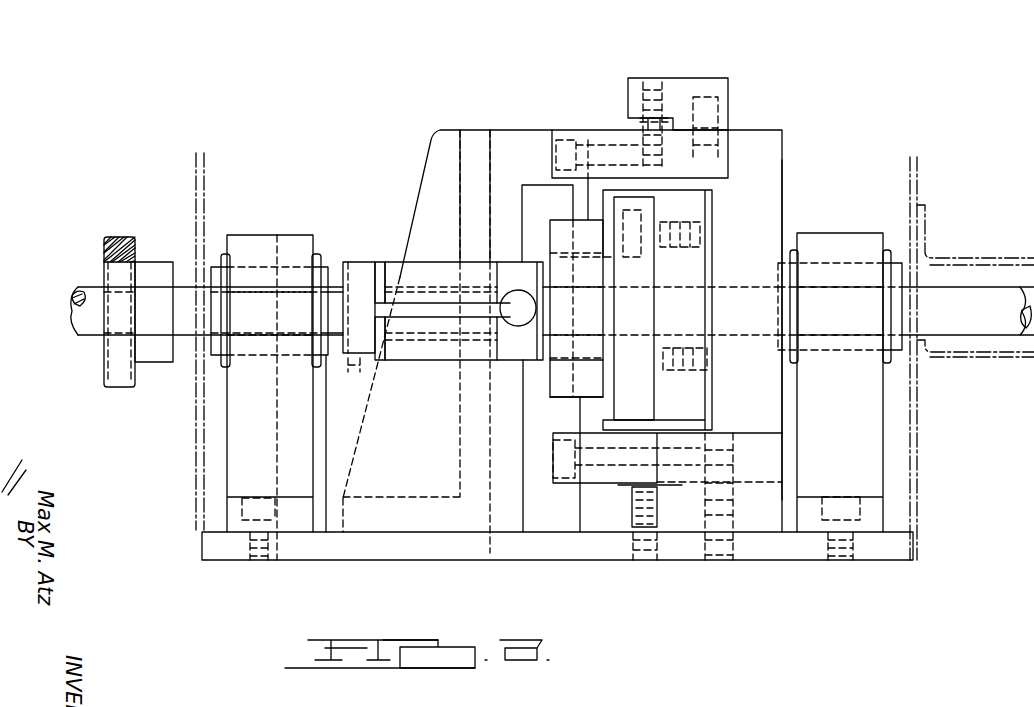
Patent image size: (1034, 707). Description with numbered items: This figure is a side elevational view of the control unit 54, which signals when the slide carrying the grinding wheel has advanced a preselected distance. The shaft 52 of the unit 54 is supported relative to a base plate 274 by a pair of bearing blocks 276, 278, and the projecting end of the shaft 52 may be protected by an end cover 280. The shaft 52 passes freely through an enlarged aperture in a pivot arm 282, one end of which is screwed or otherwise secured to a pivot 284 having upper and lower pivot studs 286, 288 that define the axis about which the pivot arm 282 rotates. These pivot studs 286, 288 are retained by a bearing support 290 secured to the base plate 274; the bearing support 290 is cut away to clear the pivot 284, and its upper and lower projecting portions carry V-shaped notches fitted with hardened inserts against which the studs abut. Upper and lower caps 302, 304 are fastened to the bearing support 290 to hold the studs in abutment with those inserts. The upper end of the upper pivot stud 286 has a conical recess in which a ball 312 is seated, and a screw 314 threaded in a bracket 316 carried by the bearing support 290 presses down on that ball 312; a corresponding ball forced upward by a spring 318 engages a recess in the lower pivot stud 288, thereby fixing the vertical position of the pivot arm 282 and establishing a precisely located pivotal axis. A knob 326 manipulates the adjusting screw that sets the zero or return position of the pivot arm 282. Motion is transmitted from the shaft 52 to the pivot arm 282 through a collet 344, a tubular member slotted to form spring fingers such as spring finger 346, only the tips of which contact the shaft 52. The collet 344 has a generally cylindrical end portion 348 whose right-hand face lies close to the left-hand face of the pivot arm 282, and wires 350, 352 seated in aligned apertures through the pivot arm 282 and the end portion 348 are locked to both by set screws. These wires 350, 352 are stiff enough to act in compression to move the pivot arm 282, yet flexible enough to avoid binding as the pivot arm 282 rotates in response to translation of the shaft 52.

The shaft 52 is at (92, 332).
The unit 54 is at (362, 186).
The base plate 274 is at (392, 552).
The bearing block 276 is at (253, 235).
The bearing block 278 is at (837, 237).
The end cover 280 is at (963, 250).
The pivot arm 282 is at (640, 270).
The pivot 284 is at (688, 193).
The upper pivot stud 286 is at (623, 135).
The lower pivot stud 288 is at (625, 475).
The bearing support 290 is at (765, 188).
The upper cap 302 is at (560, 128).
The lower cap 304 is at (565, 487).
The ball 312 is at (675, 127).
The screw 314 is at (652, 83).
The bracket 316 is at (728, 108).
The spring 318 is at (630, 532).
The knob 326 is at (104, 257).
The collet 344 is at (433, 370).
The spring finger 346 is at (380, 267).
The cylindrical end portion 348 is at (567, 393).
The wire 350 is at (612, 250).
The wire 352 is at (610, 366).